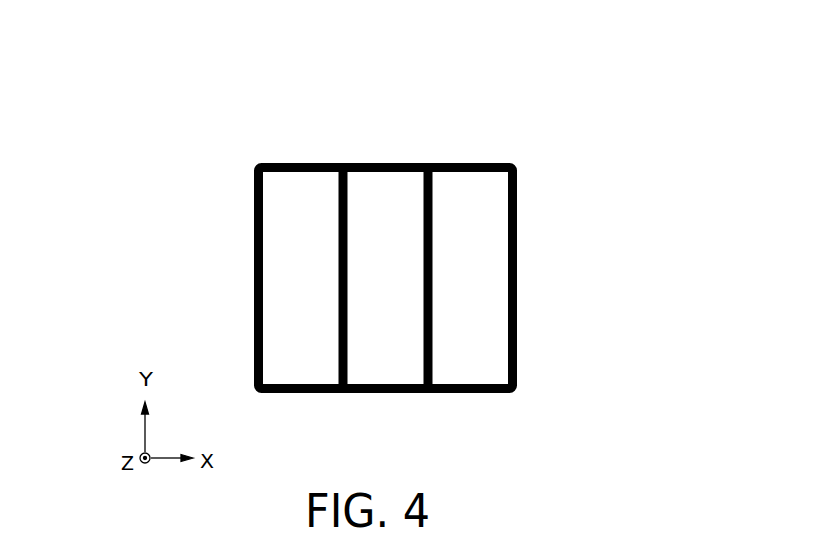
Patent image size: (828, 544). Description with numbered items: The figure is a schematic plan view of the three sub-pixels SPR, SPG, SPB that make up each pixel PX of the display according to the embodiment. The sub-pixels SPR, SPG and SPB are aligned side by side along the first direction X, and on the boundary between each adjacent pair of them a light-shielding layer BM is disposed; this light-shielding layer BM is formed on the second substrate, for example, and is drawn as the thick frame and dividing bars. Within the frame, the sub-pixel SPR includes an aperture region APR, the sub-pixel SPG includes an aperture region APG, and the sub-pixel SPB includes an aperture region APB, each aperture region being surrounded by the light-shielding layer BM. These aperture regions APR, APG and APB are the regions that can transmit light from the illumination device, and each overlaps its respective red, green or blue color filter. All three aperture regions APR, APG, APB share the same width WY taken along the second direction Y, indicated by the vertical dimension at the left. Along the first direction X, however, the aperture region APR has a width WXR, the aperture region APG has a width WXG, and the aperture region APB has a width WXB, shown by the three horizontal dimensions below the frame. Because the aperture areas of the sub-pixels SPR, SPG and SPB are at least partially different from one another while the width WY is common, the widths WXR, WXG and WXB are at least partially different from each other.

The light-shielding layer BM is at (517, 289).
The pixel PX is at (473, 116).
The sub-pixel SPR is at (310, 187).
The sub-pixel SPG is at (375, 187).
The sub-pixel SPB is at (460, 189).
The aperture region APR is at (323, 280).
The aperture region APG is at (410, 280).
The aperture region APB is at (493, 280).
The width along the second direction WY is at (252, 175).
The width of aperture region APR WXR is at (263, 396).
The width of aperture region APG WXG is at (413, 422).
The width of aperture region APB WXB is at (432, 396).